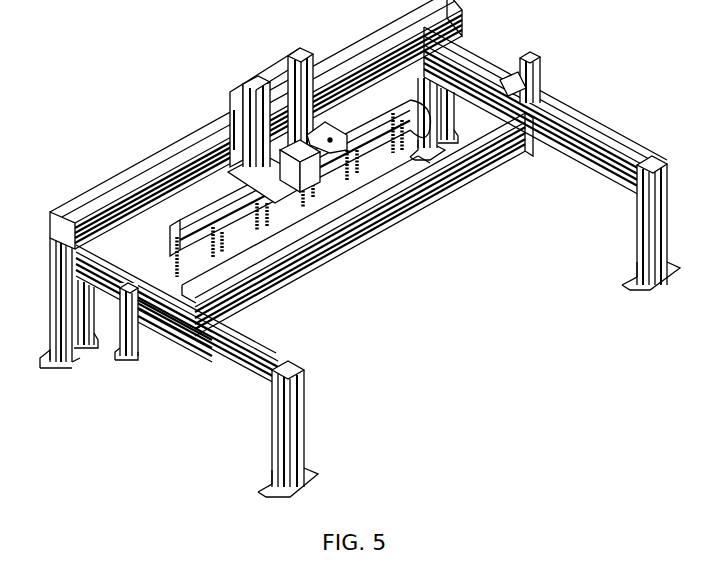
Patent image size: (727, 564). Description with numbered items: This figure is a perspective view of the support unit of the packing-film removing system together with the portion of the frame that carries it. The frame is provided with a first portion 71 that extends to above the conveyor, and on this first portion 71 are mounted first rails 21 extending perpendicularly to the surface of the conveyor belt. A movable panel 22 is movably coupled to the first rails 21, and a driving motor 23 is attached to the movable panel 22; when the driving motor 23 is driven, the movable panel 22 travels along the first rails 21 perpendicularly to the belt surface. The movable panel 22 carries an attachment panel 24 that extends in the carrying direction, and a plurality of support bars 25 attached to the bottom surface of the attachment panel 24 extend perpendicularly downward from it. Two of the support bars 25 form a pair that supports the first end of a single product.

The first portion 71 is at (143, 137).
The support bars 25 is at (158, 252).
The first rails 21 is at (283, 77).
The movable panel 22 is at (322, 152).
The driving motor 23 is at (330, 185).
The attachment panel 24 is at (290, 257).